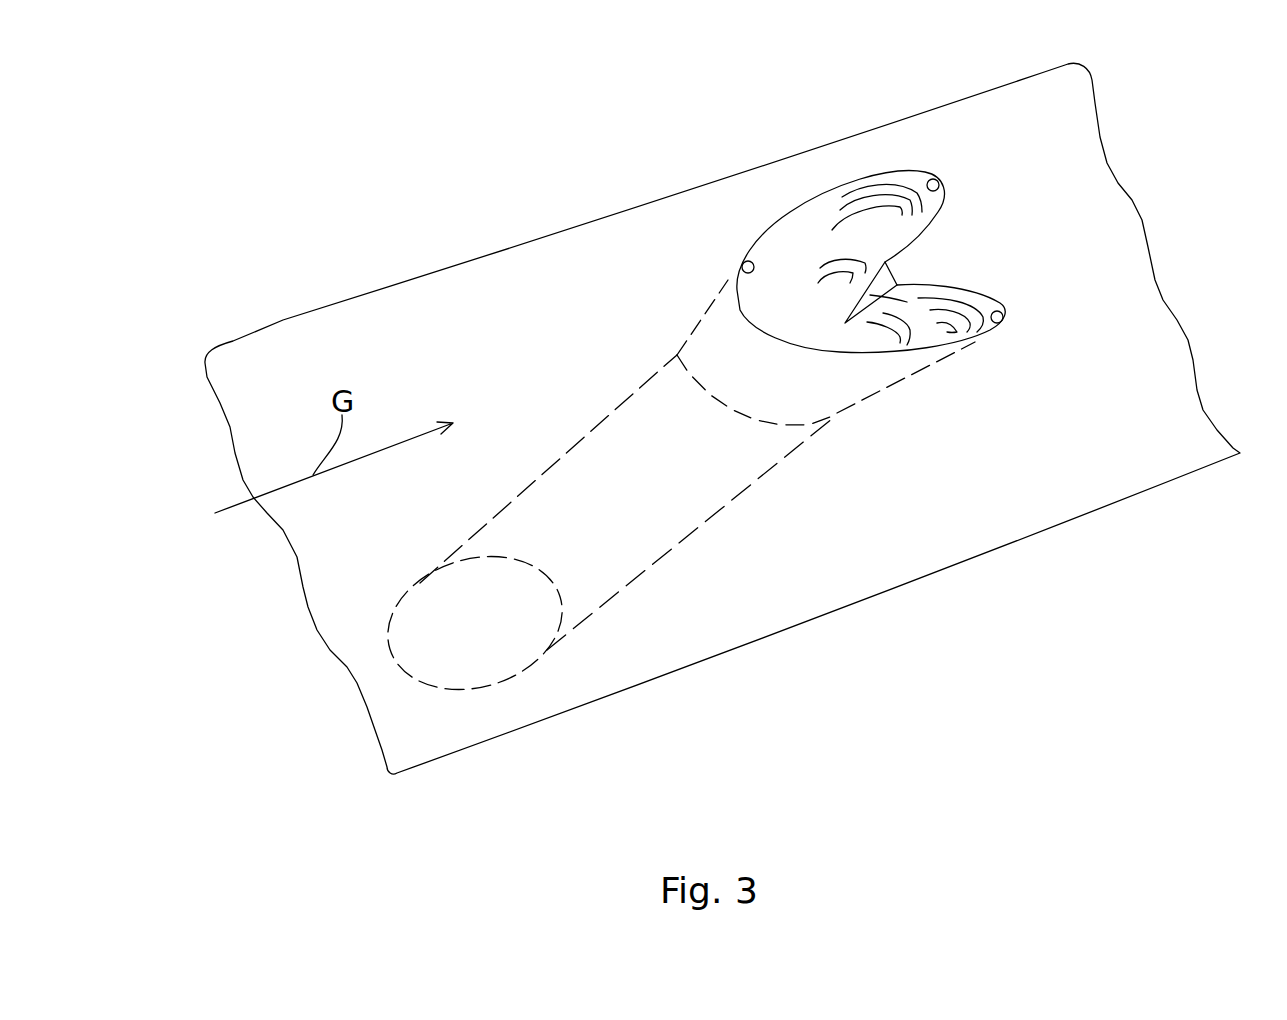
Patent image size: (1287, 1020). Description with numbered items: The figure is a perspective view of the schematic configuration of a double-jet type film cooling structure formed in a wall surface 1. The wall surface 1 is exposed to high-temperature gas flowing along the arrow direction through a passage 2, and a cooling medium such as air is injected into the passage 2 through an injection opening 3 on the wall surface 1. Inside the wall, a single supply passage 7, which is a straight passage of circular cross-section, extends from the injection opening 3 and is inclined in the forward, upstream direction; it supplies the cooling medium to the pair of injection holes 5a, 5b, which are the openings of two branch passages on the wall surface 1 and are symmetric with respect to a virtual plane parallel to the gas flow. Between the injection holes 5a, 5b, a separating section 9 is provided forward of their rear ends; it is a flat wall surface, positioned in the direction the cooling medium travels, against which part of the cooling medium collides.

The wall surface 1 is at (980, 107).
The passage 2 is at (240, 633).
The injection opening 3 is at (742, 263).
The injection hole 5a is at (937, 177).
The injection hole 5b is at (993, 323).
The supply passage 7 is at (653, 537).
The separating section 9 is at (897, 298).